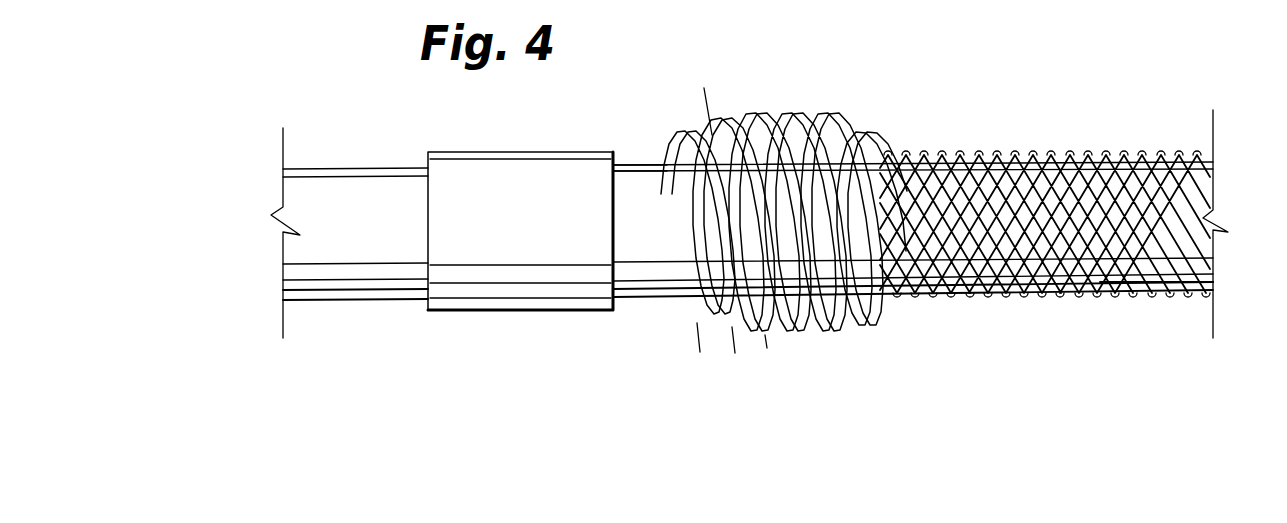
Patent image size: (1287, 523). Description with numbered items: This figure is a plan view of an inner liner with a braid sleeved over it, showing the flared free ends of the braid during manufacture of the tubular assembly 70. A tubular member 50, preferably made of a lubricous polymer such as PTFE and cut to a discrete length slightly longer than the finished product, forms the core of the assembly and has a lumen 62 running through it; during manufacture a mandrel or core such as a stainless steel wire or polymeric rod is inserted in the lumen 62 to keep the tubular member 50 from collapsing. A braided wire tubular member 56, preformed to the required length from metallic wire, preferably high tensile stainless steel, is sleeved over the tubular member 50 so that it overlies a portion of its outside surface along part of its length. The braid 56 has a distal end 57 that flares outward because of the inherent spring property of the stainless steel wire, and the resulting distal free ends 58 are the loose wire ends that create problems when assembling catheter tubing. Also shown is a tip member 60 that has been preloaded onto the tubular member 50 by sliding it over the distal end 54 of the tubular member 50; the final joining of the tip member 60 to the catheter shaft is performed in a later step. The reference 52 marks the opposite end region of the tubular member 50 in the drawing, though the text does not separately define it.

The tubular member 50 is at (629, 162).
The distal end 52 is at (1205, 105).
The distal end 54 is at (289, 127).
The braided wire tubular member 56 is at (858, 142).
The distal end 57 is at (653, 143).
The distal free ends 58 is at (769, 340).
The tip member 60 is at (521, 312).
The lumen 62 is at (1217, 278).
The tubular assembly 70 is at (955, 133).